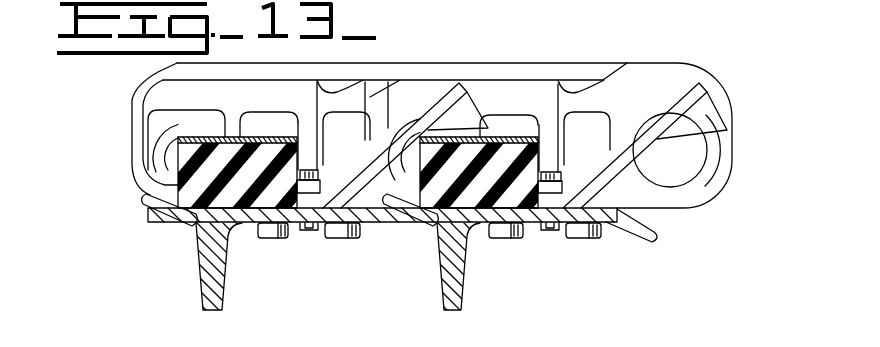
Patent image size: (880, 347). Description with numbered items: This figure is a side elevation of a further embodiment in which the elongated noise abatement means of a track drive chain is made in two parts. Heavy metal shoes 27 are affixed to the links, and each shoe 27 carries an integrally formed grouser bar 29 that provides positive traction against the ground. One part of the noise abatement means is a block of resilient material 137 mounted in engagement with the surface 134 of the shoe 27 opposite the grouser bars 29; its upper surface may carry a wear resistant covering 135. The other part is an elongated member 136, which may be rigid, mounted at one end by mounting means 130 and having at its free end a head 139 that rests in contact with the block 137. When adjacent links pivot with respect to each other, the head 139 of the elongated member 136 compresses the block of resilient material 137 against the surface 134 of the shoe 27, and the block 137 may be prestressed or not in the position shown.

The shoe 27 is at (337, 220).
The grouser bar 29 is at (212, 287).
The mounting means 130 is at (306, 128).
The surface of the shoe 134 is at (257, 221).
The wear resistant covering 135 is at (237, 137).
The elongated member 136 is at (446, 97).
The block of resilient material 137 is at (198, 212).
The head 139 is at (489, 126).